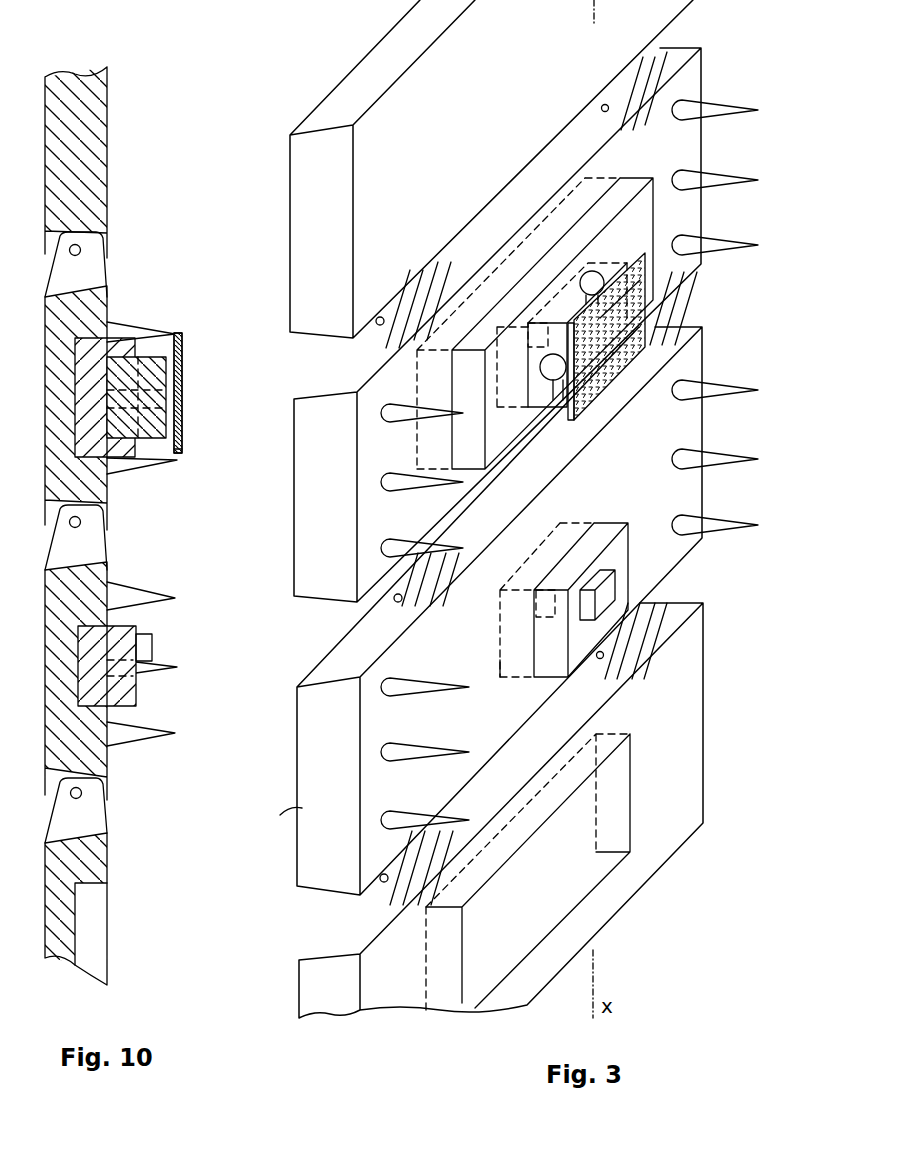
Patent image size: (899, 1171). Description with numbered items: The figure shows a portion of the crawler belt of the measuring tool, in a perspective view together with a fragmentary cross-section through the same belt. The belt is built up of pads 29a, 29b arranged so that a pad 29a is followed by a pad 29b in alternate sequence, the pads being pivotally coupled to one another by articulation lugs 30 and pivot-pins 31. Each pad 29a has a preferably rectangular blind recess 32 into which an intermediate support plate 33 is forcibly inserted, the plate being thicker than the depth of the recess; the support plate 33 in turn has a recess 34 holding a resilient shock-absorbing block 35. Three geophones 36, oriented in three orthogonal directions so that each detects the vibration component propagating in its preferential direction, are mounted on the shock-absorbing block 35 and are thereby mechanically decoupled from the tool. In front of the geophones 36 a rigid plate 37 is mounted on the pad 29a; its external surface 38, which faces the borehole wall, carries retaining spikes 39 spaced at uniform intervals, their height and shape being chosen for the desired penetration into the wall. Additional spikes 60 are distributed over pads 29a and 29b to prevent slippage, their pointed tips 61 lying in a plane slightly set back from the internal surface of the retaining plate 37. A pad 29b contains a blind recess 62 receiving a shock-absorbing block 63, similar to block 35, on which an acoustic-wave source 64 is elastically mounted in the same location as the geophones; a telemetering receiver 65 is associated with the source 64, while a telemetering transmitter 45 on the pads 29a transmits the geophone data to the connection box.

In FIG. 10, the pad 29a is at (60, 460).
In FIG. 3, the pad 29a is at (310, 574).
In FIG. 10, the pad 29b is at (95, 160).
In FIG. 3, the pad 29b is at (312, 247).
In FIG. 10, the articulation lug 30 is at (93, 284).
In FIG. 3, the articulation lug 30 is at (433, 297).
In FIG. 10, the pivot-pin 31 is at (80, 248).
In FIG. 3, the pivot-pin 31 is at (381, 316).
In FIG. 10, the blind recess 32 is at (96, 937).
In FIG. 3, the blind recess 32 is at (555, 886).
In FIG. 10, the intermediate support plate 33 is at (118, 448).
In FIG. 3, the intermediate support plate 33 is at (462, 458).
In FIG. 3, the recess 34 is at (498, 380).
In FIG. 10, the resilient shock-absorbing block 35 is at (166, 428).
In FIG. 3, the resilient shock-absorbing block 35 is at (540, 400).
In FIG. 10, the geophone 36 is at (180, 335).
In FIG. 3, the geophone 36 is at (600, 277).
In FIG. 10, the rigid plate 37 is at (181, 452).
In FIG. 3, the rigid plate 37 is at (645, 250).
In FIG. 10, the external surface 38 is at (180, 350).
In FIG. 3, the external surface 38 is at (648, 338).
In FIG. 3, the retaining spike 39 is at (633, 317).
In FIG. 3, the telemetering transmitter 45 is at (553, 310).
In FIG. 10, the spike 60 is at (146, 323).
In FIG. 3, the spike 60 is at (688, 108).
In FIG. 10, the pointed tip 61 is at (180, 466).
In FIG. 3, the pointed tip 61 is at (742, 522).
In FIG. 10, the blind recess 62 is at (88, 711).
In FIG. 3, the blind recess 62 is at (503, 670).
In FIG. 10, the shock-absorbing block 63 is at (137, 628).
In FIG. 3, the shock-absorbing block 63 is at (603, 537).
In FIG. 10, the acoustic-wave source 64 is at (150, 647).
In FIG. 3, the acoustic-wave source 64 is at (613, 584).
In FIG. 3, the telemetering receiver 65 is at (555, 578).